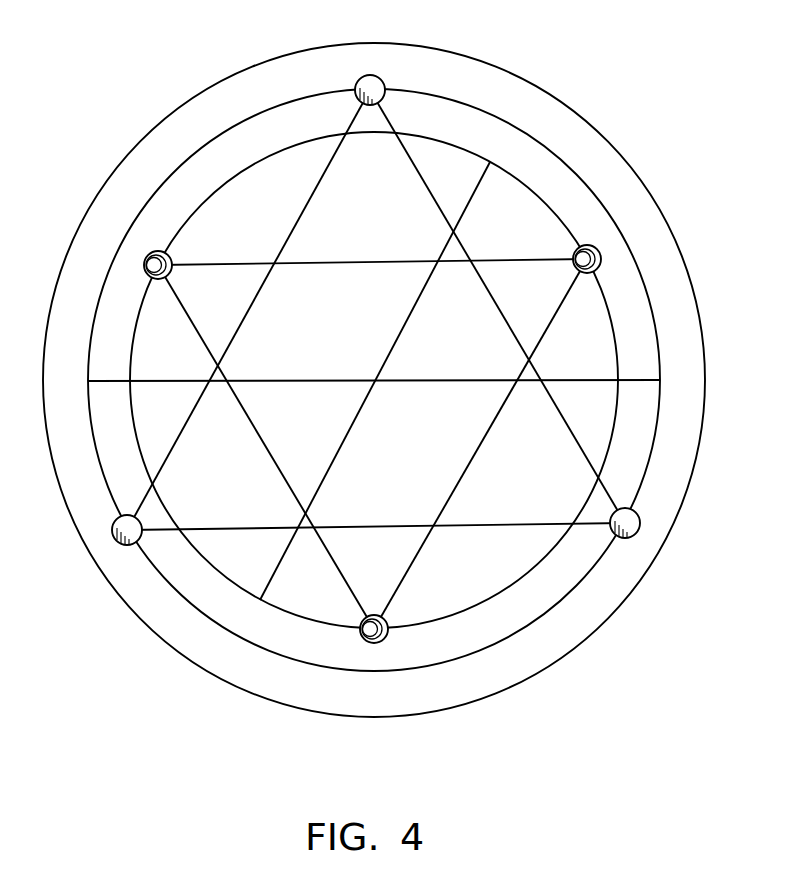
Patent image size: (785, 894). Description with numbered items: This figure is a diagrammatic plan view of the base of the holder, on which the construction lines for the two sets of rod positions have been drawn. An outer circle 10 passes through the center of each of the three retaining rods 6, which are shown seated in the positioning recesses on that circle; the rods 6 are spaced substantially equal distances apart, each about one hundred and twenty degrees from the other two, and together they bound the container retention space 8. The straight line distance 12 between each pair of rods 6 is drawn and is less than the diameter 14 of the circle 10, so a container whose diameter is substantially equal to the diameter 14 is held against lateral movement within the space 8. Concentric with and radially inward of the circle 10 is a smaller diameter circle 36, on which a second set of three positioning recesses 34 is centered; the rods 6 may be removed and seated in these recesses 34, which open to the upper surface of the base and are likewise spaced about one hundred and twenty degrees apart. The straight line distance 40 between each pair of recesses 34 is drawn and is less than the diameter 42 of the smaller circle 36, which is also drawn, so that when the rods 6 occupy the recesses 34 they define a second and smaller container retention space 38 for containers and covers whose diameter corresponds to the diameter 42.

The retaining rod 6 is at (368, 72).
The container retention space 8 is at (523, 143).
The circle 10 is at (390, 397).
The straight line distance 12 is at (250, 307).
The diameter 14 is at (637, 380).
The positioning recess 34 is at (144, 265).
The smaller diameter circle 36 is at (318, 625).
The second container retention space 38 is at (532, 205).
The straight line distance 40 is at (367, 262).
The diameter 42 is at (260, 600).